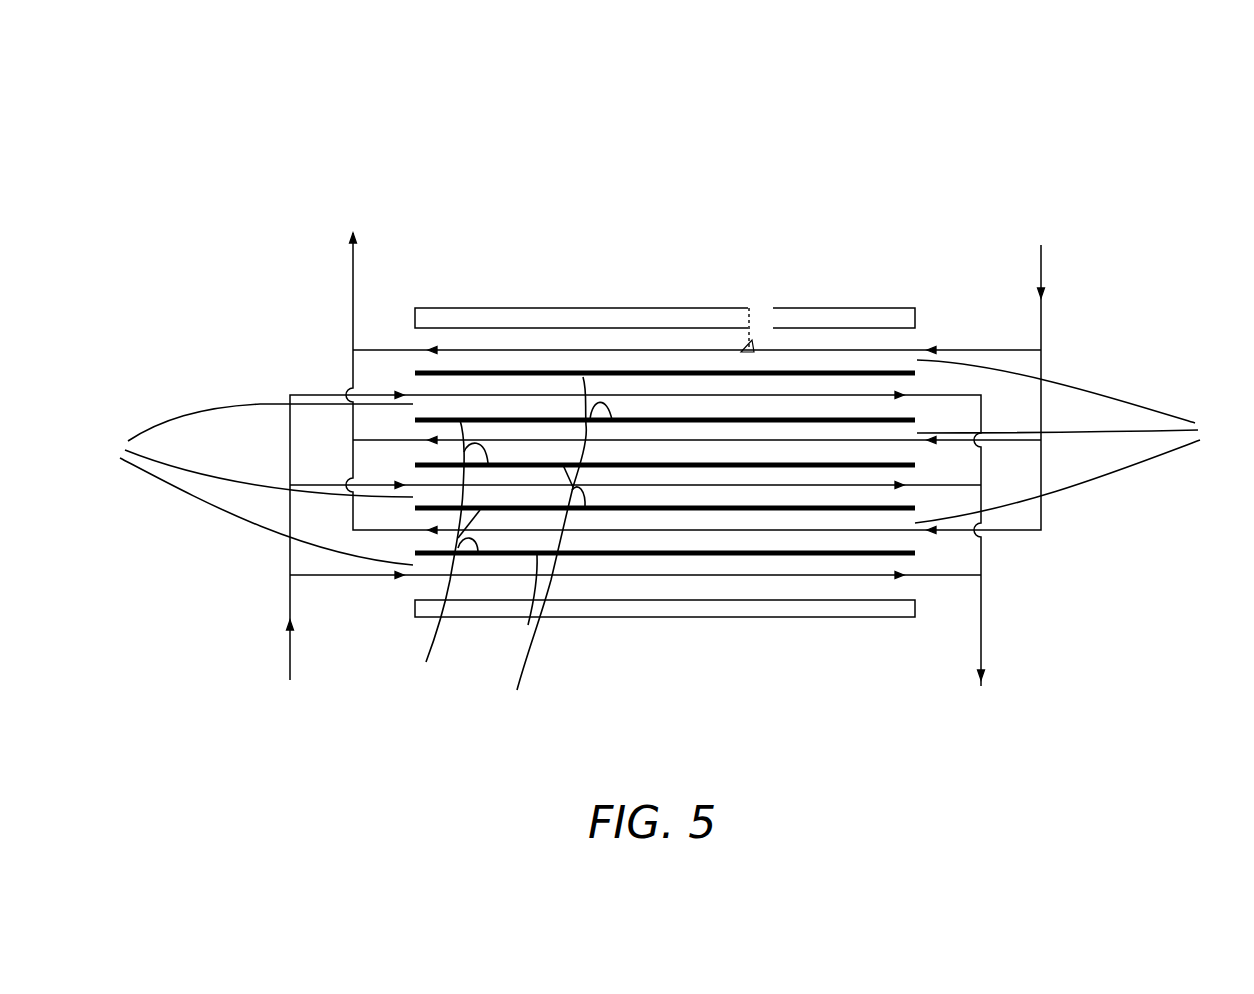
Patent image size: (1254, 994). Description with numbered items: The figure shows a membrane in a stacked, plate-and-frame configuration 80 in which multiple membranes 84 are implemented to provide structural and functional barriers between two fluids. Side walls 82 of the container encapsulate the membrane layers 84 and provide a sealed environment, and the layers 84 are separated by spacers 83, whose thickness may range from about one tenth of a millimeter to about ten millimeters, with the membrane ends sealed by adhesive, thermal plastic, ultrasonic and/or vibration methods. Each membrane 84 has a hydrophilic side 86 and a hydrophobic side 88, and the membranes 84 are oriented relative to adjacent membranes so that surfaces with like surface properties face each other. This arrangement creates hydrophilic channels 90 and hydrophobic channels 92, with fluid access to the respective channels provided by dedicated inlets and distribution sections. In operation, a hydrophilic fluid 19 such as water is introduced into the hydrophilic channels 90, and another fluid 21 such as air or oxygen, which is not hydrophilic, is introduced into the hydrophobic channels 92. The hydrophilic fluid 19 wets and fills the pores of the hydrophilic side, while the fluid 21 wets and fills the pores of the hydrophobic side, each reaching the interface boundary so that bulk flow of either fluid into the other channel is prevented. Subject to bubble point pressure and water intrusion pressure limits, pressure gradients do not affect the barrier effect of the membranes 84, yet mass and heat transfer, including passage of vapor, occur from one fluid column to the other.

The plate-and-frame configuration 80 is at (855, 170).
The side walls 82 is at (647, 318).
The spacers 83 is at (805, 342).
The membranes 84 is at (695, 550).
The hydrophilic fluid 19 is at (348, 282).
The fluid 21 is at (290, 607).
The hydrophilic side 86 is at (453, 559).
The hydrophobic side 88 is at (561, 548).
The hydrophilic channels 90 is at (1083, 441).
The hydrophobic channels 92 is at (244, 484).